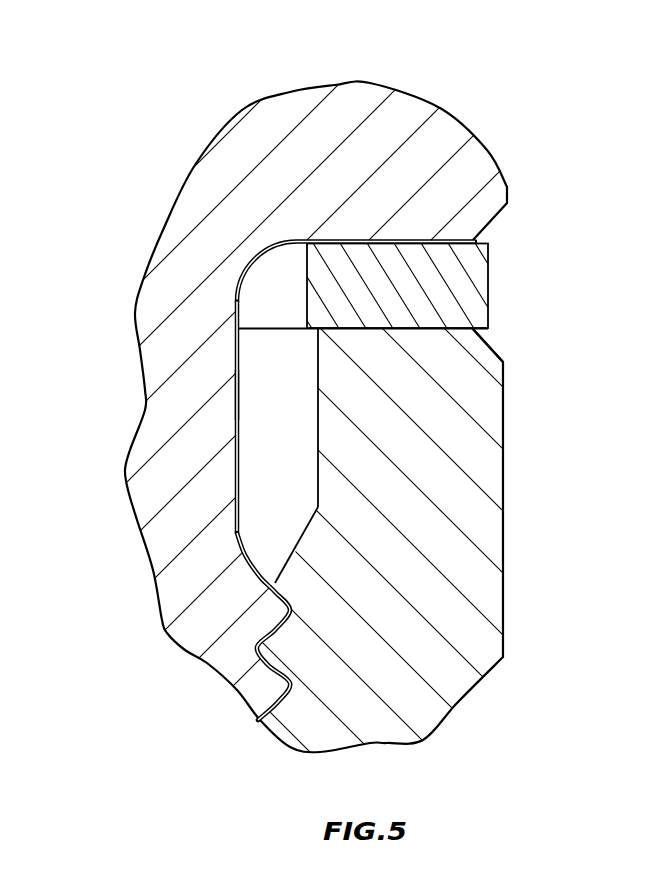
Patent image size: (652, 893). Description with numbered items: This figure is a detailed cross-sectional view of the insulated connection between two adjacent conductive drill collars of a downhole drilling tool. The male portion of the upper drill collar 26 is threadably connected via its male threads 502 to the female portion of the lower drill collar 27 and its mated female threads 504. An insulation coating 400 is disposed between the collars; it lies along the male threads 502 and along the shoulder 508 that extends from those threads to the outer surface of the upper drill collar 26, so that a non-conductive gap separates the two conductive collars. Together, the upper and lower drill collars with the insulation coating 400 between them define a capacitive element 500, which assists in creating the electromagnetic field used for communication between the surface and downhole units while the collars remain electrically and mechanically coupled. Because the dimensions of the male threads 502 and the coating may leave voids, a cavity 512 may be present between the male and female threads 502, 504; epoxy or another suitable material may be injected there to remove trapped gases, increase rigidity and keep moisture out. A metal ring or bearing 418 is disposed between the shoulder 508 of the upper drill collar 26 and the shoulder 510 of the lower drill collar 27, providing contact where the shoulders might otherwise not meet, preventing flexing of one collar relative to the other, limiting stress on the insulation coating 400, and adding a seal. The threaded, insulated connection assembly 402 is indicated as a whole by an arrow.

The capacitive element 500 is at (207, 108).
The upper drill collar 26 is at (445, 130).
The lower drill collar 27 is at (488, 470).
The sensor assembly 402 is at (520, 230).
The bearing 418 is at (488, 295).
The shoulder 508 is at (260, 252).
The insulation coating 400 is at (232, 483).
The cavity 512 is at (238, 410).
The shoulder 510 is at (425, 328).
The female threads 504 is at (285, 586).
The male threads 502 is at (270, 600).